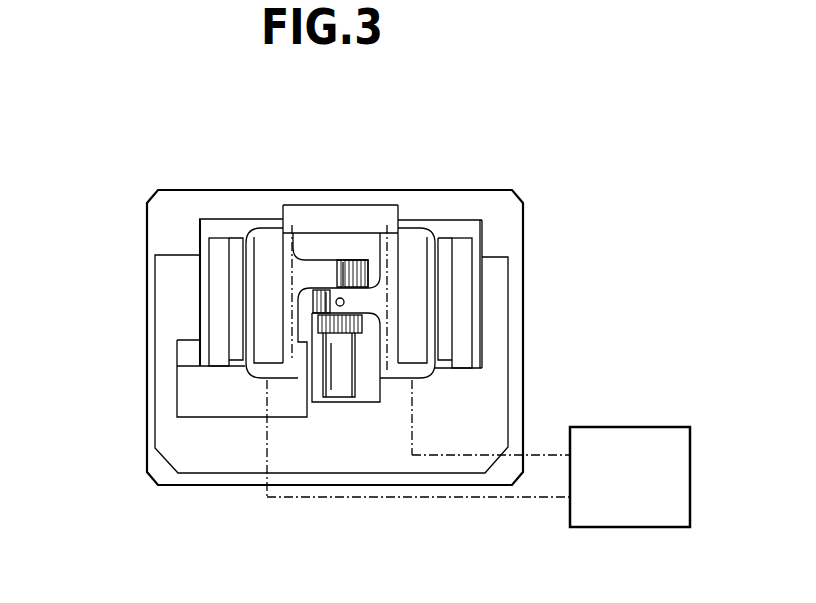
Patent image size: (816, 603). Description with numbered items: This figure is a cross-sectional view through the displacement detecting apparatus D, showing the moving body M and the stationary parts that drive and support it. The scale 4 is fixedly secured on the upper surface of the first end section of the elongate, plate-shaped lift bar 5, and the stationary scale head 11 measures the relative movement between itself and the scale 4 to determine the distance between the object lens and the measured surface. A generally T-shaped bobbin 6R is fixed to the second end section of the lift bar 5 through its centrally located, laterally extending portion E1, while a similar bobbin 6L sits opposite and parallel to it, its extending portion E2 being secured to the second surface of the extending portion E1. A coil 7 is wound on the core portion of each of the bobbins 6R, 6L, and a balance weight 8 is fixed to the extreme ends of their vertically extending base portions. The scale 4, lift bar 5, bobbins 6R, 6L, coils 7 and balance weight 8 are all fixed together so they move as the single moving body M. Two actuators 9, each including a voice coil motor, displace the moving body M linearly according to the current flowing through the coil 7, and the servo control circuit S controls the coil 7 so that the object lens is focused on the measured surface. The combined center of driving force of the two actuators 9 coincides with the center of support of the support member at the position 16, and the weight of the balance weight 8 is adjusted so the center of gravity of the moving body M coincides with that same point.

The scale 4 is at (345, 373).
The lift bar 5 is at (321, 300).
The bobbin 6L is at (280, 207).
The bobbin 6R is at (425, 212).
The coil 7 is at (240, 370).
The balance weight 8 is at (373, 215).
The actuator 9 is at (218, 263).
The scale head 11 is at (185, 402).
The center of support 16 is at (331, 343).
The displacement detecting apparatus D is at (419, 172).
The extending portion E1 is at (331, 310).
The extending portion E2 is at (345, 272).
The moving body M is at (440, 331).
The servo control circuit S is at (637, 427).